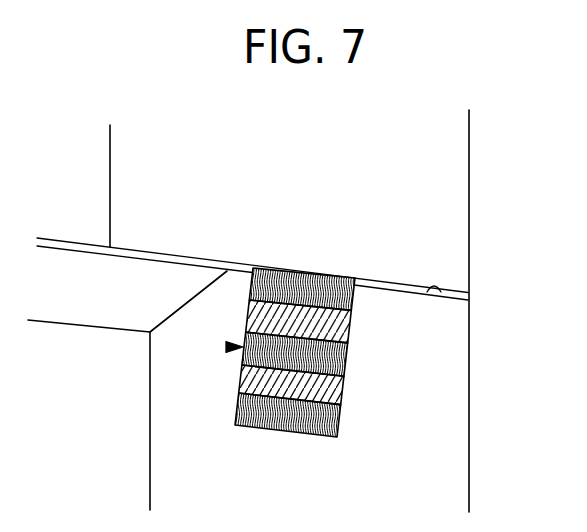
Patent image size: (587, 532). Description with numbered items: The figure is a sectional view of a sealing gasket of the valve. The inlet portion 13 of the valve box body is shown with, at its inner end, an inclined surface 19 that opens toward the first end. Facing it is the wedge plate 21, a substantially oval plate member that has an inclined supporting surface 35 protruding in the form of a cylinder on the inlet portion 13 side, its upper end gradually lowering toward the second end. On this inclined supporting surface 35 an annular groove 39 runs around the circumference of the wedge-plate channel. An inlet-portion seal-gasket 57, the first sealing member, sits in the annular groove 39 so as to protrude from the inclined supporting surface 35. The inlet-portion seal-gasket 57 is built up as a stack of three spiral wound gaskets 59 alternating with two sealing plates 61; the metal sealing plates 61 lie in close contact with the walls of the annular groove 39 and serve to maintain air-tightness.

The inlet portion 13 is at (440, 185).
The inclined surface 19 is at (438, 286).
The wedge plate 21 is at (182, 480).
The inclined supporting surface 35 is at (457, 288).
The annular groove 39 is at (304, 337).
The inlet-portion seal-gasket 57 is at (228, 347).
The spiral wound gasket 59 is at (305, 267).
The sealing plate 61 is at (346, 330).